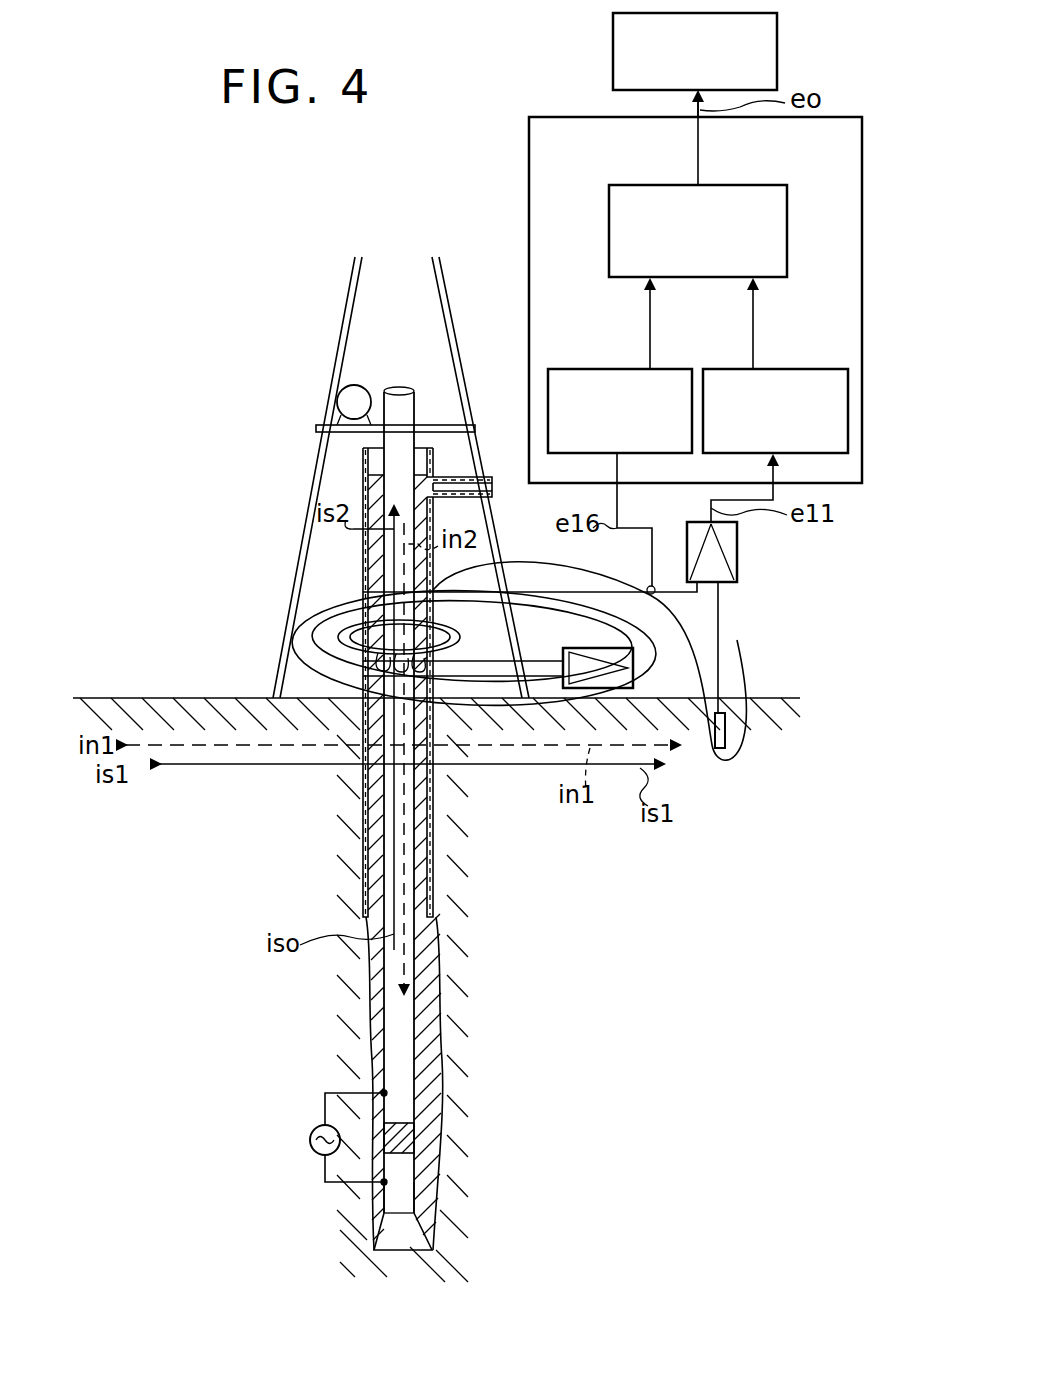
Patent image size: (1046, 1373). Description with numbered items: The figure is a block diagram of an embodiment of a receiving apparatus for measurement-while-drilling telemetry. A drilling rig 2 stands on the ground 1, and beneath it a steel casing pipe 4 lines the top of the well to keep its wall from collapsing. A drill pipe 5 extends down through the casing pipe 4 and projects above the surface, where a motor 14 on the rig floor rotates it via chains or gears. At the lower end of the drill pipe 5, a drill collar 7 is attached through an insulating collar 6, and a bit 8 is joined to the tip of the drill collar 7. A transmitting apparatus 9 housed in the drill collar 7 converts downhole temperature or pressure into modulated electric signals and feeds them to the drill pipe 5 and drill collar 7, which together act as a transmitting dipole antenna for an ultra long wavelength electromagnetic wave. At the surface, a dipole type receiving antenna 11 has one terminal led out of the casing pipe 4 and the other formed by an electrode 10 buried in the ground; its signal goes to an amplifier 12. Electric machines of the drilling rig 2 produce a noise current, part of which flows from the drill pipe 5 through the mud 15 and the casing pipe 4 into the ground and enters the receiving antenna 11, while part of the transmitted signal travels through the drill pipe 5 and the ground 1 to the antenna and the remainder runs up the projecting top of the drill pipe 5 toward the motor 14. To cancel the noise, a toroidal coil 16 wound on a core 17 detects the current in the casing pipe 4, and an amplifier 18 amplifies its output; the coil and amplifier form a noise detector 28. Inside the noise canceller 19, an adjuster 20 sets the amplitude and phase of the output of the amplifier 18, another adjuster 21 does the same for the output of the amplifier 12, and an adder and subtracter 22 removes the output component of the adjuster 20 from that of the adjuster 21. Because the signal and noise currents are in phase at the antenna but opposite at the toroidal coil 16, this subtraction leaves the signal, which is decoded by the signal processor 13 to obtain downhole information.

The ground 1 is at (130, 698).
The drilling rig 2 is at (475, 428).
The casing pipe 4 is at (365, 858).
The drill pipe 5 is at (416, 1050).
The insulating collar 6 is at (414, 1138).
The drill collar 7 is at (396, 1198).
The bit 8 is at (402, 1250).
The transmitting apparatus 9 is at (308, 1140).
The electrode 10 is at (737, 742).
The receiving antenna 11 is at (738, 672).
The amplifier 12 is at (737, 560).
The signal processor 13 is at (777, 52).
The motor 14 is at (337, 404).
The mud 15 is at (372, 1000).
The toroidal coil 16 is at (332, 647).
The core 17 is at (352, 623).
The amplifier 18 is at (565, 662).
The noise canceller 19 is at (563, 117).
The adjuster 20 is at (590, 369).
The adjuster 21 is at (804, 369).
The adder and subtracter 22 is at (787, 215).
The noise detector 28 is at (318, 622).